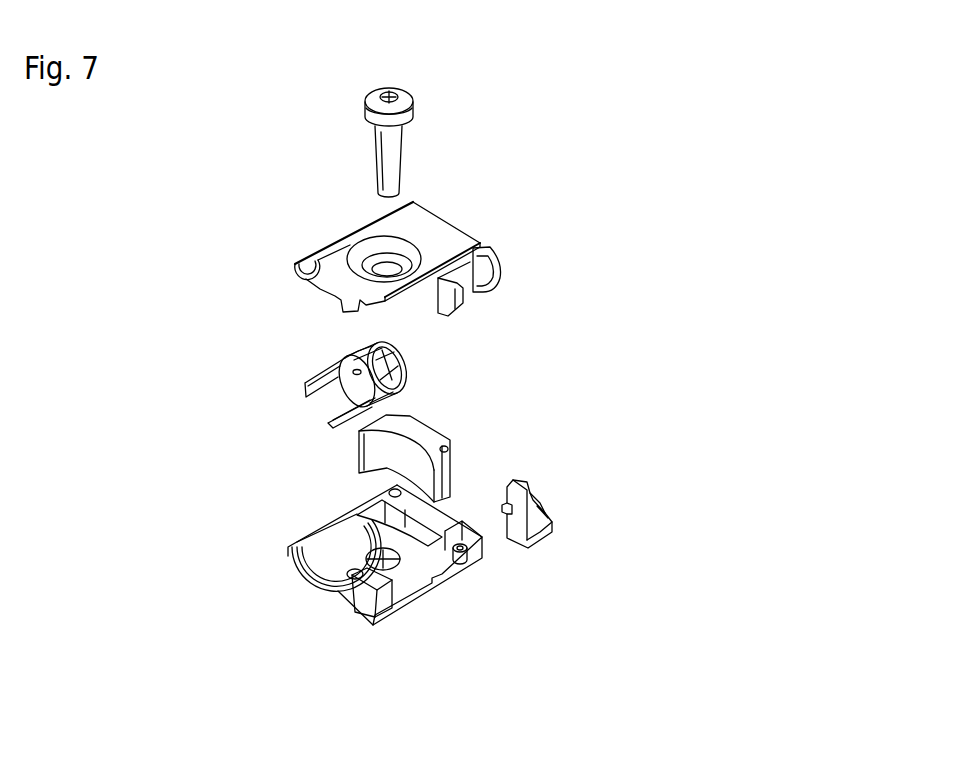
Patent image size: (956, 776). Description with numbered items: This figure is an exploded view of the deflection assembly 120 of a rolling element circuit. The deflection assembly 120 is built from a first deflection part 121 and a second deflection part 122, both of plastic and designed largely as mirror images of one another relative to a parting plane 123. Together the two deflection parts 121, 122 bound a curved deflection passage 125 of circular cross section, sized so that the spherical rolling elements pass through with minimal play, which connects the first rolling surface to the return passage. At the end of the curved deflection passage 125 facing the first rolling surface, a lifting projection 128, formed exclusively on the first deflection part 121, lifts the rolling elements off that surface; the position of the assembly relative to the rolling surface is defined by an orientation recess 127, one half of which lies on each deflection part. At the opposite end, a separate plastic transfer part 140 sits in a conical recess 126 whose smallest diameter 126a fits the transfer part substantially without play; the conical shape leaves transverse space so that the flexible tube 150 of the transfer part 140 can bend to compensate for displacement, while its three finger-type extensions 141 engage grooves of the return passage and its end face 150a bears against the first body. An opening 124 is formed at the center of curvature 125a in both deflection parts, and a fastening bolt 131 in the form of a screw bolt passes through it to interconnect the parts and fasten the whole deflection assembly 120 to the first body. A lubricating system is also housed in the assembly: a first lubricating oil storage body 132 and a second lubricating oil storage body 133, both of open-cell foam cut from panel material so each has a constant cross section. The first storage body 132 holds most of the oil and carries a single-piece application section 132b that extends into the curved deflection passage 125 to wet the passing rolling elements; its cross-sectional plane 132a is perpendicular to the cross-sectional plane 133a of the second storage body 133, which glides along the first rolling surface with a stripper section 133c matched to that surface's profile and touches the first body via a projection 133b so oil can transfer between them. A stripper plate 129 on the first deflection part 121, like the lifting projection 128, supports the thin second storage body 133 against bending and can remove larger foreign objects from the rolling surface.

The deflection assembly 120 is at (728, 130).
The first deflection part 121 is at (498, 238).
The second deflection part 122 is at (495, 633).
The parting plane 123 is at (359, 586).
The opening 124 is at (342, 458).
The curved deflection passage 125 is at (404, 639).
The center of curvature 125a is at (267, 601).
The conical recess 126 is at (274, 555).
The smallest diameter 126a is at (272, 536).
The orientation recess 127 is at (315, 653).
The lifting projection 128 is at (569, 304).
The stripper plate 129 is at (555, 257).
The fastening bolt 131 is at (437, 115).
The first lubricating oil storage body 132 is at (504, 428).
The cross-sectional plane 132a is at (504, 412).
The application section 132b is at (515, 465).
The second lubricating oil storage body 133 is at (596, 555).
The cross-sectional plane 133a is at (613, 559).
The projection 133b is at (566, 574).
The stripper section 133c is at (614, 519).
The transfer part 140 is at (260, 325).
The finger-type extensions 141 is at (246, 358).
The flexible tube 150 is at (280, 318).
The end face 150a is at (261, 399).